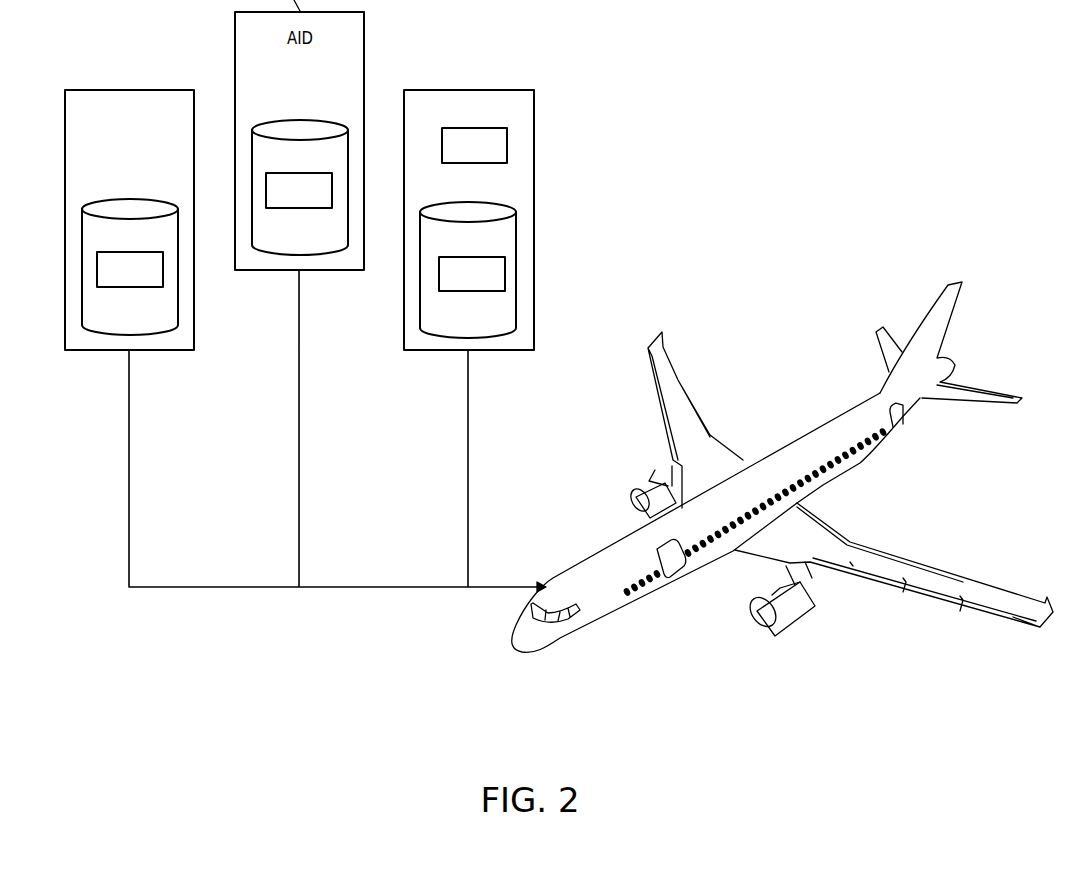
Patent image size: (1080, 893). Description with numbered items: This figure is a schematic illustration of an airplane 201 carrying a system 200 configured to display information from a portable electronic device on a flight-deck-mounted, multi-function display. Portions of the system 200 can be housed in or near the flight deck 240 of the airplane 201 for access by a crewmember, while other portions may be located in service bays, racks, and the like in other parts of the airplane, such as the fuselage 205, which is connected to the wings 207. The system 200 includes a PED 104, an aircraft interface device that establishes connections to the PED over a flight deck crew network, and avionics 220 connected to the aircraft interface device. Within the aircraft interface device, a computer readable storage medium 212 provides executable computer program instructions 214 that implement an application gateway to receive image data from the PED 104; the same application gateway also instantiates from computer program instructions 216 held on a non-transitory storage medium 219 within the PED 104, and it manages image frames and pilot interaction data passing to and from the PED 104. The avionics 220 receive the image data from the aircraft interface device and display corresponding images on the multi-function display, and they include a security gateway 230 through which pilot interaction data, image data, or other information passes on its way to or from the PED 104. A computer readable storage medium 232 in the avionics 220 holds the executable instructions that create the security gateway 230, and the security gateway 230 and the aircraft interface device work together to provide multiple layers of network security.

The PED 104 is at (128, 90).
The non-transitory storage medium 219 is at (133, 203).
The computer program instructions 216 is at (110, 283).
The computer readable storage medium 212 is at (303, 125).
The executable computer program instructions 214 is at (279, 204).
The avionics 220 is at (476, 90).
The security gateway 230 is at (454, 159).
The computer readable storage medium 232 is at (452, 288).
The system 200 is at (666, 201).
The airplane 201 is at (782, 518).
The fuselage 205 is at (793, 429).
The wings 207 is at (930, 603).
The flight deck 240 is at (553, 604).